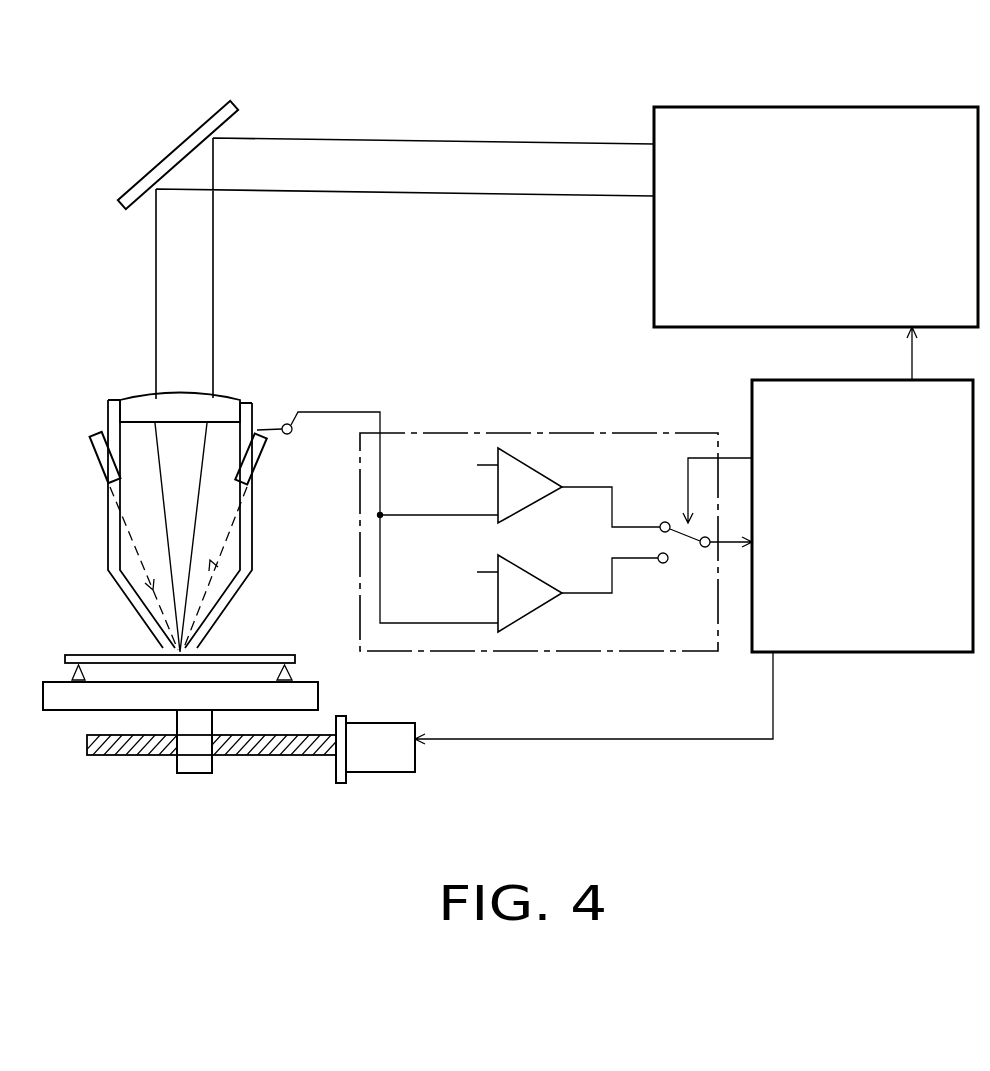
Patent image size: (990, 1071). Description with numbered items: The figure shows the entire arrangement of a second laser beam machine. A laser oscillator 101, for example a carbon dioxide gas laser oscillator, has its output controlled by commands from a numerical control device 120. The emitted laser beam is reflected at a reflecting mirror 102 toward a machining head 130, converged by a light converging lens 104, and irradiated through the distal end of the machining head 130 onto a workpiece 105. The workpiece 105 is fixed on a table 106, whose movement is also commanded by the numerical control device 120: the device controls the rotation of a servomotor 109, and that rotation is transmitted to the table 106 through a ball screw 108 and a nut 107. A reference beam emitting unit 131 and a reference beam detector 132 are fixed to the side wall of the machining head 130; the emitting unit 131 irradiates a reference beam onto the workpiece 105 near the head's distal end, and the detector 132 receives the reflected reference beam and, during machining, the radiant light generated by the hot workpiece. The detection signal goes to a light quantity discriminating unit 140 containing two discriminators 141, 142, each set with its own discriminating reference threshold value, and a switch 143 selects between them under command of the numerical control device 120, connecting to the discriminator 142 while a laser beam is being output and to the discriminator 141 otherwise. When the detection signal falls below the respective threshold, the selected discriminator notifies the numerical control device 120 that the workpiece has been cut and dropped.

The laser oscillator 101 is at (867, 107).
The reflecting mirror 102 is at (236, 106).
The light converging lens 104 is at (213, 397).
The workpiece 105 is at (255, 653).
The table 106 is at (318, 695).
The nut 107 is at (213, 766).
The ball screw 108 is at (297, 757).
The servomotor 109 is at (392, 723).
The numerical control device 120 is at (863, 653).
The machining head 130 is at (255, 418).
The reference beam emitting unit 131 is at (97, 457).
The reference beam detector 132 is at (258, 468).
The light quantity discriminating unit 140 is at (612, 433).
The discriminator 141 is at (537, 468).
The discriminator 142 is at (527, 572).
The switch 143 is at (683, 545).